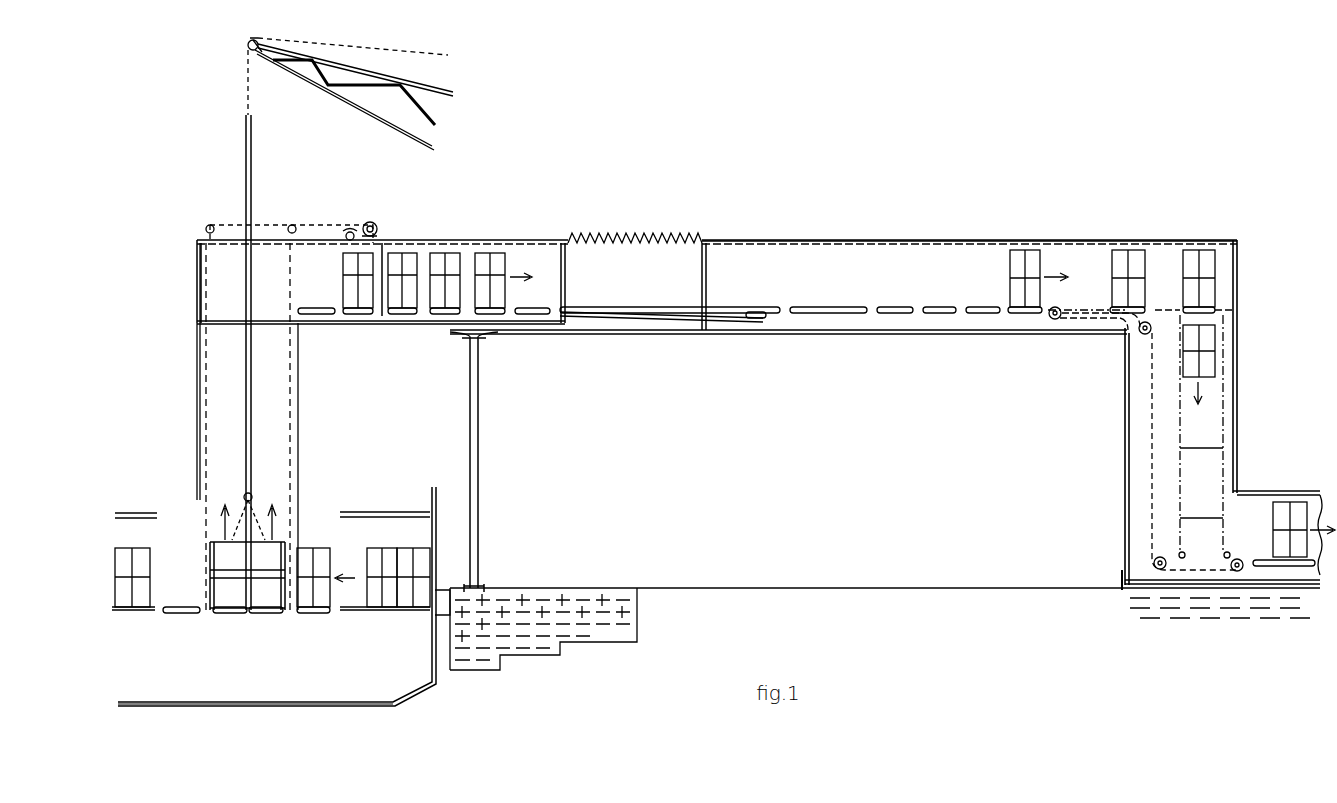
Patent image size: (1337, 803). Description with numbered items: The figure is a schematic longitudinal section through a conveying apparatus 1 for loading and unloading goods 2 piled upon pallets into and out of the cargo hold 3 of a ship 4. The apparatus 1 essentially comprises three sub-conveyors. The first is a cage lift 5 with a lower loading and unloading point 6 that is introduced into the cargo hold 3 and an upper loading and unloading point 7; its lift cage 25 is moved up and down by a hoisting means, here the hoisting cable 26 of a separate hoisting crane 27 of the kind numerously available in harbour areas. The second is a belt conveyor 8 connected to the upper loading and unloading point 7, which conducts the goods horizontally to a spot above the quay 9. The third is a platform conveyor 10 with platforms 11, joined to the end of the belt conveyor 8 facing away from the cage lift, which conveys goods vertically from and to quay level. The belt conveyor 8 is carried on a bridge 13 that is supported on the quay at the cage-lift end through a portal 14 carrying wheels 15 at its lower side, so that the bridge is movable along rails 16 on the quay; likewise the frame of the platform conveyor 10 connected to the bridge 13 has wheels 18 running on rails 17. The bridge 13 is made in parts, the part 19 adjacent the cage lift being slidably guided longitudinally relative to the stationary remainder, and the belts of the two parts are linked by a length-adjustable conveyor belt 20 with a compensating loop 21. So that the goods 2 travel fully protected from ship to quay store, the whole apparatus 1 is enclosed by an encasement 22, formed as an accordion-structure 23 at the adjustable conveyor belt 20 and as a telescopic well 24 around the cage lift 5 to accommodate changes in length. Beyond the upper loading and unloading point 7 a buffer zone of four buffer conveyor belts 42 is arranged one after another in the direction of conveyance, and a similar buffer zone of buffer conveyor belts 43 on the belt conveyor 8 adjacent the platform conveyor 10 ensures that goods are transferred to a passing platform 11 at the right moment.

The apparatus 1 is at (786, 167).
The goods 2 is at (485, 262).
The cargo hold 3 is at (273, 680).
The ship 4 is at (241, 716).
The cage lift 5 is at (189, 430).
The lower loading and unloading point 6 is at (305, 629).
The upper loading and unloading point 7 is at (356, 334).
The belt conveyor 8 is at (664, 340).
The quay 9 is at (916, 576).
The platform conveyor 10 is at (1215, 427).
The platforms 11 is at (1198, 515).
The bridge 13 is at (586, 336).
The column 14 is at (478, 467).
The wheels 15 is at (484, 588).
The rails 16 is at (484, 592).
The rails 17 is at (1120, 590).
The wheels 18 is at (1120, 580).
The part 19 is at (515, 314).
The conveyor belt 20 is at (670, 317).
The compensating loop 21 is at (763, 322).
The encasement 22 is at (928, 238).
The accordion-structure 23 is at (612, 232).
The telescopic well 24 is at (197, 370).
The lift cage 25 is at (300, 502).
The hoisting cable 26 is at (245, 78).
The hoisting crane 27 is at (430, 85).
The buffer conveyor belts 42 is at (430, 315).
The buffer conveyor belts 43 is at (1025, 315).